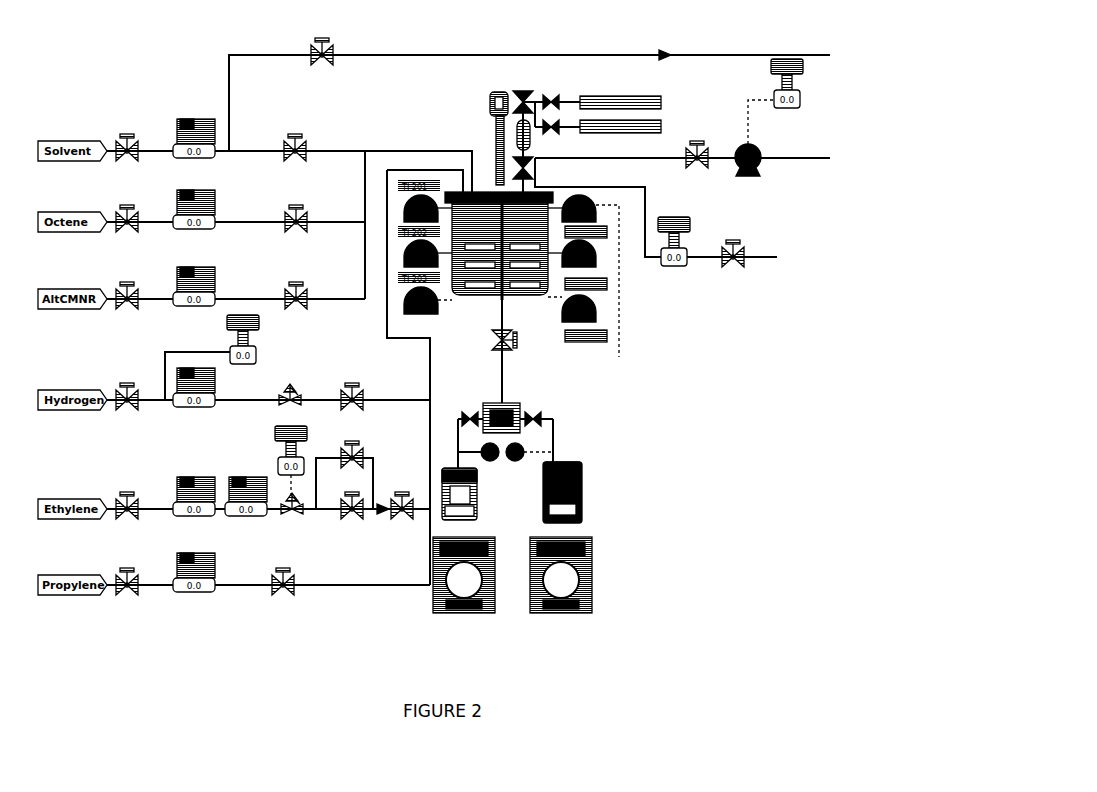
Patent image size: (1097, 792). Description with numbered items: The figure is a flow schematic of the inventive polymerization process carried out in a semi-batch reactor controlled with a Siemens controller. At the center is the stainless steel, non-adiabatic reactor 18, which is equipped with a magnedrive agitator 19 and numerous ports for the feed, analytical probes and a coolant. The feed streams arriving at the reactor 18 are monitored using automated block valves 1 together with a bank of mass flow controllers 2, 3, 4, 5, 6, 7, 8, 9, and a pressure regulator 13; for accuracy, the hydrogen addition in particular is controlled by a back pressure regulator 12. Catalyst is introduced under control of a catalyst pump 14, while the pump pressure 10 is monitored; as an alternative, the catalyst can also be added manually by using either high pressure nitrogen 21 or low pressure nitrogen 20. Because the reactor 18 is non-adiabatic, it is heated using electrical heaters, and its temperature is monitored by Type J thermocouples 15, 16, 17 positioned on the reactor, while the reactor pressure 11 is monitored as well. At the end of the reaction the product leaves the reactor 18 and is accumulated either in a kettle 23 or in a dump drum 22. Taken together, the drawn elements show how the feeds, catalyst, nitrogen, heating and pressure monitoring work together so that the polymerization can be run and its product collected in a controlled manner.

The automated block valve 1 is at (125, 132).
The mass flow controller 2 is at (194, 121).
The mass flow controller 3 is at (194, 197).
The mass flow controller 4 is at (194, 273).
The mass flow controller 5 is at (194, 366).
The mass flow controller 6 is at (194, 481).
The mass flow controller 7 is at (194, 559).
The mass flow controller 8 is at (243, 329).
The mass flow controller 9 is at (297, 440).
The pump pressure 10 is at (785, 71).
The reactor pressure 11 is at (674, 229).
The back pressure regulator 12 is at (297, 379).
The pressure regulator 13 is at (290, 512).
The catalyst pump 14 is at (751, 177).
The Type J thermocouple 15 is at (583, 215).
The Type J thermocouple 16 is at (587, 265).
The Type J thermocouple 17 is at (595, 318).
The reactor 18 is at (499, 246).
The magnedrive agitator 19 is at (496, 122).
The low pressure nitrogen 20 is at (616, 99).
The high pressure nitrogen 21 is at (616, 124).
The dump drum 22 is at (450, 484).
The kettle 23 is at (566, 478).